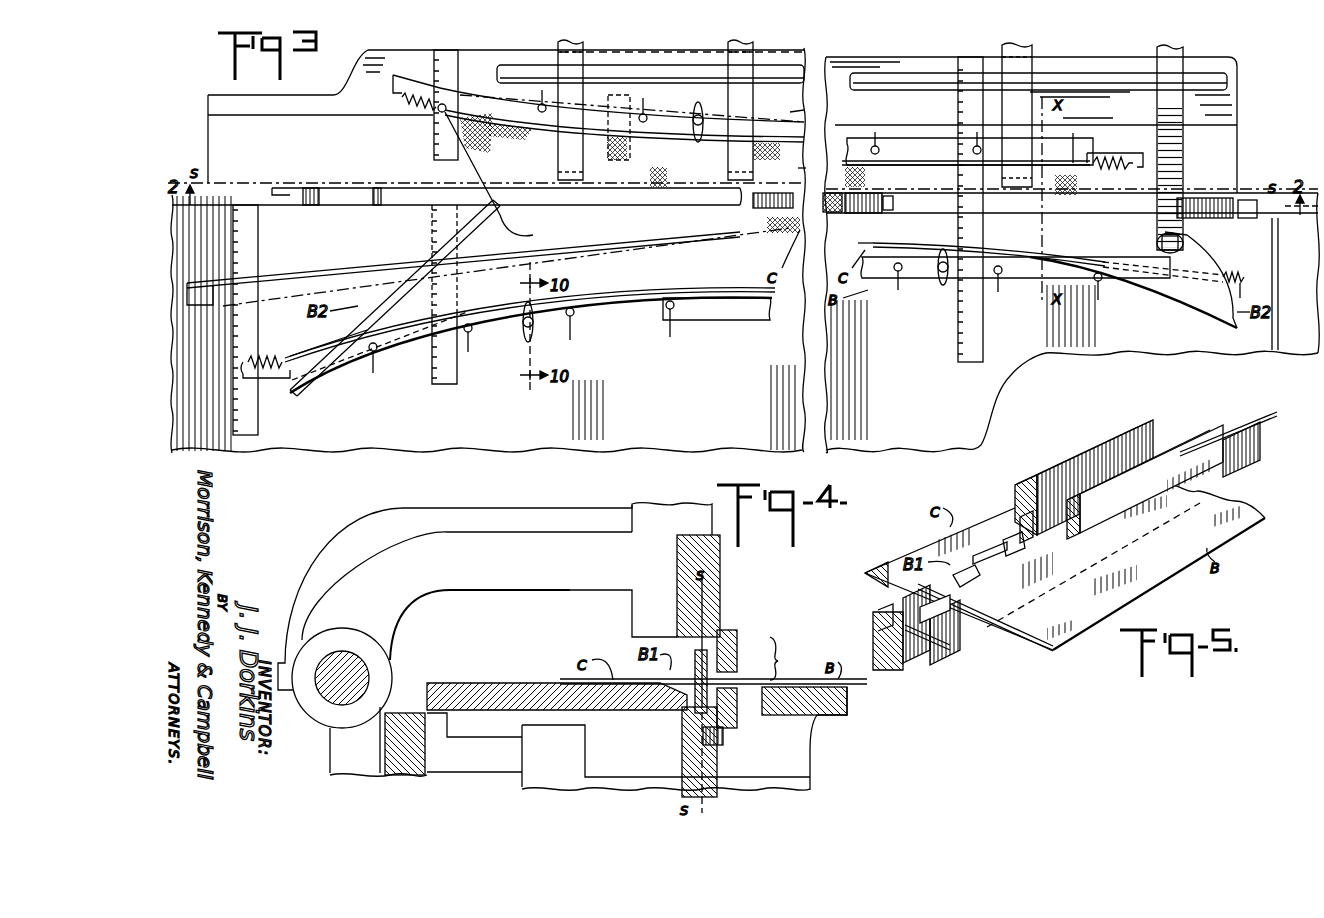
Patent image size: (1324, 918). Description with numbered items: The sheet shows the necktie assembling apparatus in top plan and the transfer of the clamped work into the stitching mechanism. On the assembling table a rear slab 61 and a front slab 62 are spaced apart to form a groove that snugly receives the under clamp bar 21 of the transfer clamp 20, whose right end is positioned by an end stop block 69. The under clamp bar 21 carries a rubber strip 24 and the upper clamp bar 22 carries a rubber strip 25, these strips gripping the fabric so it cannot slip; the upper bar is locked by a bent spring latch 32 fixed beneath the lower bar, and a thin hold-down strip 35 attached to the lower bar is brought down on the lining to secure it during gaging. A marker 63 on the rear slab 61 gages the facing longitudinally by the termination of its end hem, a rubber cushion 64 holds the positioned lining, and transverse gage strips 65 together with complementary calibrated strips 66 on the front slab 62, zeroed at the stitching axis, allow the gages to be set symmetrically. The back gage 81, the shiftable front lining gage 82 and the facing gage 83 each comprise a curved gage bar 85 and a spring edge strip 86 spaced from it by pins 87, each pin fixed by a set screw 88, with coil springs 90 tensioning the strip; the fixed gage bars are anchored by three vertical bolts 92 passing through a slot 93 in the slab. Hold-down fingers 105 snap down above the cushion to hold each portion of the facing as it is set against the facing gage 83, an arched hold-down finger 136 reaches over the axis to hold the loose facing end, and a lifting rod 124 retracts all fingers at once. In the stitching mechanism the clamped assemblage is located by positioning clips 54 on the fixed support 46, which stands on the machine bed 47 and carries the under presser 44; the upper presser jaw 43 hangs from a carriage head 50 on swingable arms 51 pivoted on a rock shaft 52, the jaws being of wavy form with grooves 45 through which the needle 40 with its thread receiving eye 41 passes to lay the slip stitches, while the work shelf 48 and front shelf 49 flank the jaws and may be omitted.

In FIG. 3, the transfer clamp 20 is at (390, 195).
In FIG. 4, the transfer clamp 20 is at (786, 658).
In FIG. 3, the under clamp bar 21 is at (862, 244).
In FIG. 4, the under clamp bar 21 is at (740, 667).
In FIG. 5, the under clamp bar 21 is at (1246, 474).
In FIG. 3, the upper clamp bar 22 is at (425, 190).
In FIG. 4, the upper clamp bar 22 is at (740, 648).
In FIG. 5, the upper clamp bar 22 is at (1193, 424).
In FIG. 3, the rubber strip 24 is at (798, 168).
In FIG. 5, the rubber strip 25 is at (1074, 535).
In FIG. 3, the spring latch 32 is at (275, 178).
In FIG. 3, the hold-down strip 35 is at (760, 208).
In FIG. 5, the hold-down strip 35 is at (1268, 425).
In FIG. 5, the needle 40 is at (1003, 552).
In FIG. 5, the thread receiving eye 41 is at (972, 573).
In FIG. 4, the upper presser jaw 43 is at (722, 637).
In FIG. 5, the upper presser jaw 43 is at (1015, 525).
In FIG. 4, the under presser 44 is at (692, 710).
In FIG. 5, the under presser 44 is at (905, 608).
In FIG. 5, the grooves 45 is at (884, 612).
In FIG. 4, the fixed support 46 is at (686, 753).
In FIG. 5, the fixed support 46 is at (935, 662).
In FIG. 4, the machine bed 47 is at (604, 783).
In FIG. 4, the work shelf 48 is at (474, 686).
In FIG. 4, the front shelf 49 is at (858, 708).
In FIG. 4, the carriage head 50 is at (686, 552).
In FIG. 5, the carriage head 50 is at (1107, 437).
In FIG. 4, the swingable arms 51 is at (520, 566).
In FIG. 4, the rock shaft 52 is at (344, 656).
In FIG. 4, the positioning clips 54 is at (735, 720).
In FIG. 3, the rear slab 61 is at (210, 100).
In FIG. 3, the front slab 62 is at (786, 440).
In FIG. 3, the marker 63 is at (603, 98).
In FIG. 3, the rubber cushion 64 is at (216, 137).
In FIG. 3, the transverse gage strips 65 is at (451, 43).
In FIG. 3, the calibrated strips 66 is at (233, 413).
In FIG. 3, the end stop block 69 is at (1263, 205).
In FIG. 3, the back gage 81 is at (467, 95).
In FIG. 3, the front lining gage 82 is at (316, 272).
In FIG. 3, the facing gage 83 is at (745, 318).
In FIG. 3, the gage bar 85 is at (845, 140).
In FIG. 3, the spring edge strip 86 is at (890, 147).
In FIG. 3, the pins 87 is at (682, 322).
In FIG. 3, the set screw 88 is at (663, 320).
In FIG. 3, the coil springs 90 is at (262, 358).
In FIG. 3, the vertical bolts 92 is at (697, 117).
In FIG. 3, the slot 93 is at (695, 135).
In FIG. 3, the hold-down fingers 105 is at (748, 63).
In FIG. 3, the lifting rod 124 is at (800, 85).
In FIG. 3, the arched hold-down finger 136 is at (1180, 160).